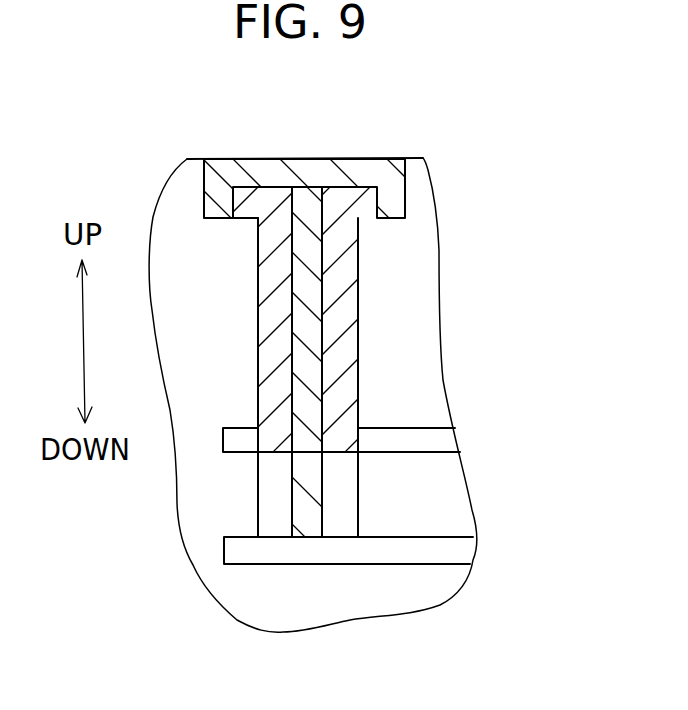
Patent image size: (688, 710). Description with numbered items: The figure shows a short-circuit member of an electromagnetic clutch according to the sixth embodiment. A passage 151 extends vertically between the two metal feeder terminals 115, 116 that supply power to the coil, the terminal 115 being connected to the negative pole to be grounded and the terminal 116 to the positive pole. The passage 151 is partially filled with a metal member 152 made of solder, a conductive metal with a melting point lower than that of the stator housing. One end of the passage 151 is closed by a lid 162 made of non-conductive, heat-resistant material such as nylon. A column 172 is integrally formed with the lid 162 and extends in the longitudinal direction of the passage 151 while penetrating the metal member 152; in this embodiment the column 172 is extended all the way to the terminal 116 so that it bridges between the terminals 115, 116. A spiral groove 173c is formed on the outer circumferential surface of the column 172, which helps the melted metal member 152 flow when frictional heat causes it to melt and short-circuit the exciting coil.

The lid 162 is at (368, 171).
The metal member 152 is at (340, 278).
The feeder terminal 115 is at (433, 425).
The column 172 is at (327, 472).
The spiral groove 173c is at (310, 497).
The passage 151 is at (343, 517).
The feeder terminal 116 is at (442, 565).